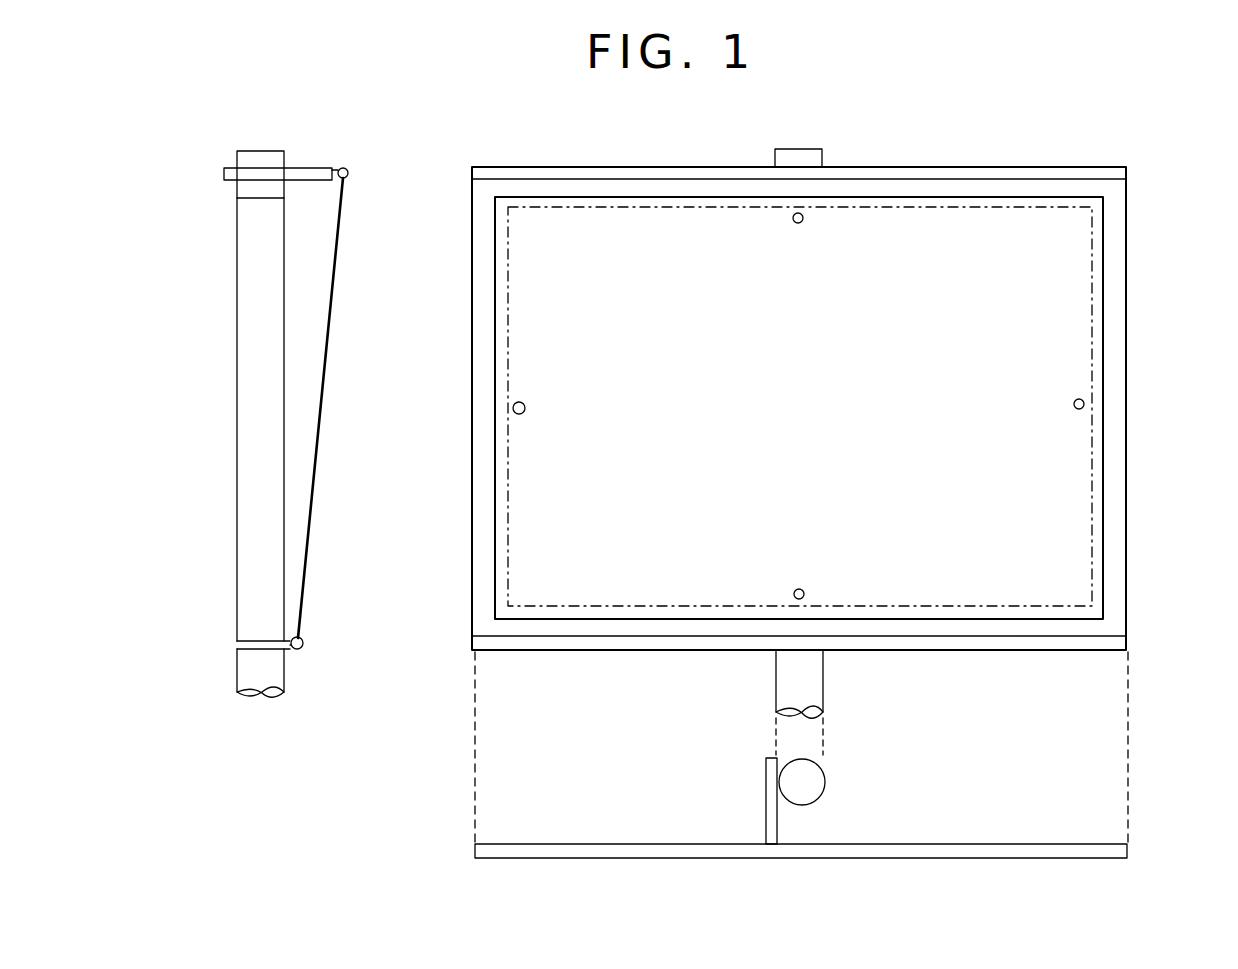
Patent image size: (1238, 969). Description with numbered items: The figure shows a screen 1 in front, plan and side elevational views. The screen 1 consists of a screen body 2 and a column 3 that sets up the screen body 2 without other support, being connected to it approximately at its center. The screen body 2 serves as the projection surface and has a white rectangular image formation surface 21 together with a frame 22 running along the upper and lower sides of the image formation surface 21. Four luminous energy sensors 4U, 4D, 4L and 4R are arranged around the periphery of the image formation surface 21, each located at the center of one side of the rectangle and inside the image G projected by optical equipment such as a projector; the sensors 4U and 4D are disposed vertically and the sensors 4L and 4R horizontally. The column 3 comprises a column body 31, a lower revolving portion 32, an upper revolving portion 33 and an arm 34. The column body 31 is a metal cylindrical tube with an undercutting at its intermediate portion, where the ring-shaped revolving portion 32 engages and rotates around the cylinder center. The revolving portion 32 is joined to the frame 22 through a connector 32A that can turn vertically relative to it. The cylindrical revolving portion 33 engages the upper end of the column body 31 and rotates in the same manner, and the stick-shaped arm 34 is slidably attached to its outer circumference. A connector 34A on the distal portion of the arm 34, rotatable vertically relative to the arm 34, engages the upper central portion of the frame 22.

The screen 1 is at (388, 722).
The screen body 2 is at (305, 573).
The column 3 is at (158, 420).
The luminous energy sensor 4U is at (803, 220).
The luminous energy sensor 4L is at (525, 407).
The luminous energy sensor 4R is at (1075, 400).
The luminous energy sensor 4D is at (805, 593).
The image formation surface 21 is at (327, 352).
The frame 22 is at (349, 178).
The column body 31 is at (242, 428).
The revolving portion 32 is at (238, 650).
The connector 32A is at (291, 650).
The revolving portion 33 is at (245, 160).
The arm 34 is at (295, 171).
The connector 34A is at (334, 168).
The image G is at (508, 527).